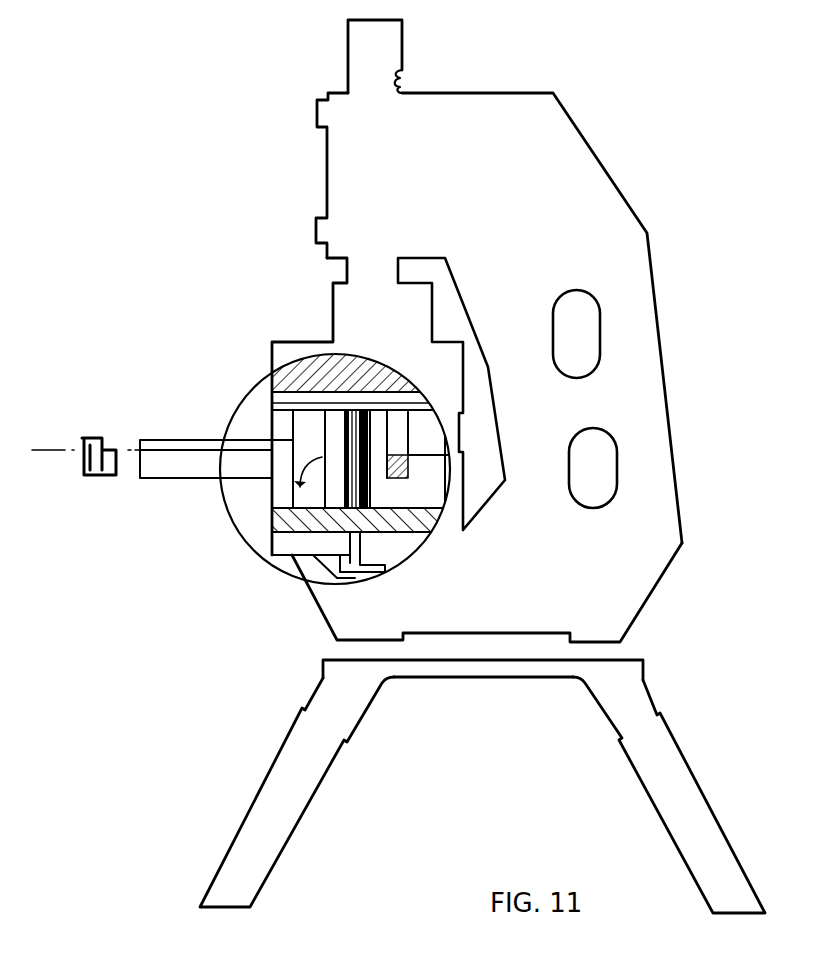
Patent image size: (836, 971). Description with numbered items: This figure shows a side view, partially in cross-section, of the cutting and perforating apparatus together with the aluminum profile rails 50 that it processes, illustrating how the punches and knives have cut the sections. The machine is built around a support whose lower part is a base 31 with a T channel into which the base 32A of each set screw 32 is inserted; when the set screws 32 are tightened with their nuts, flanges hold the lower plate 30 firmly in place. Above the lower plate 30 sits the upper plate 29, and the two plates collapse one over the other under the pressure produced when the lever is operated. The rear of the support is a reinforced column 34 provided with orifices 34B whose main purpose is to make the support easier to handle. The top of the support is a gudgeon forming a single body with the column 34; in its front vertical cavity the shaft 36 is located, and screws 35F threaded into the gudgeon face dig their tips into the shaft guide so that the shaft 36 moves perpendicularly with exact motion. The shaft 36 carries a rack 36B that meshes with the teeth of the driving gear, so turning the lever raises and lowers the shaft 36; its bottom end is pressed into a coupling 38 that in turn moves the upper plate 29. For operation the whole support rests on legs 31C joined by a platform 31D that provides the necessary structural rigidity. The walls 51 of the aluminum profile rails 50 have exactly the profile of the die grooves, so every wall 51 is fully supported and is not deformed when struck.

The upper plate 29 is at (283, 404).
The lower plate 30 is at (285, 541).
The base 31 is at (347, 613).
The legs 31C is at (265, 841).
The platform 31D is at (537, 668).
The set screws 32 is at (360, 550).
The base of the set screw 32A is at (385, 571).
The reinforced column 34 is at (677, 381).
The orifices 34B is at (585, 332).
The screws 35F is at (327, 114).
The shaft 36 is at (390, 44).
The rack 36B is at (406, 74).
The coupling 38 is at (345, 323).
The aluminum profile rails 50 is at (77, 477).
The walls 51 is at (76, 511).